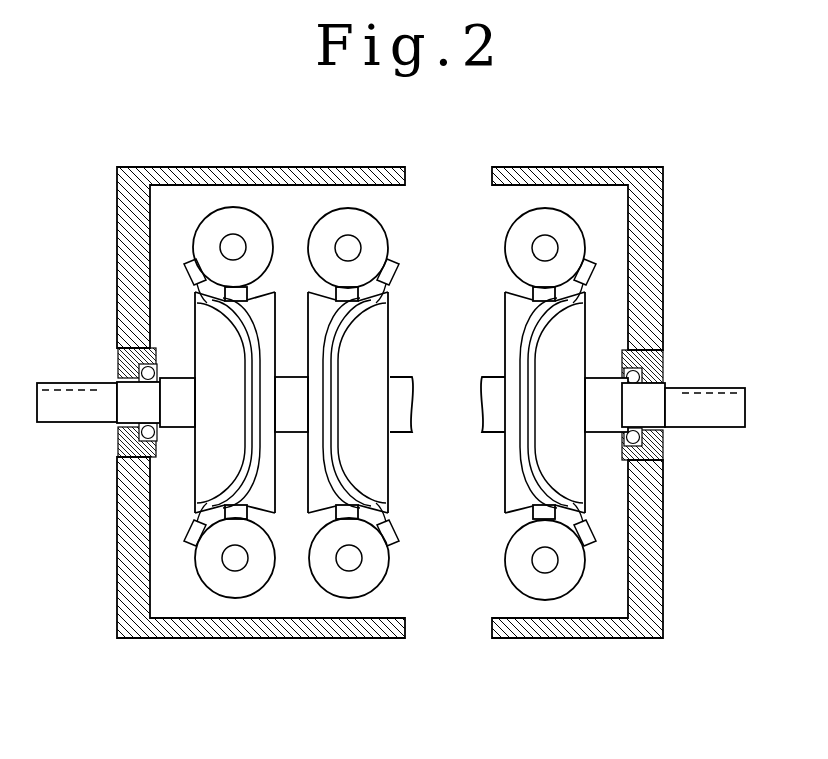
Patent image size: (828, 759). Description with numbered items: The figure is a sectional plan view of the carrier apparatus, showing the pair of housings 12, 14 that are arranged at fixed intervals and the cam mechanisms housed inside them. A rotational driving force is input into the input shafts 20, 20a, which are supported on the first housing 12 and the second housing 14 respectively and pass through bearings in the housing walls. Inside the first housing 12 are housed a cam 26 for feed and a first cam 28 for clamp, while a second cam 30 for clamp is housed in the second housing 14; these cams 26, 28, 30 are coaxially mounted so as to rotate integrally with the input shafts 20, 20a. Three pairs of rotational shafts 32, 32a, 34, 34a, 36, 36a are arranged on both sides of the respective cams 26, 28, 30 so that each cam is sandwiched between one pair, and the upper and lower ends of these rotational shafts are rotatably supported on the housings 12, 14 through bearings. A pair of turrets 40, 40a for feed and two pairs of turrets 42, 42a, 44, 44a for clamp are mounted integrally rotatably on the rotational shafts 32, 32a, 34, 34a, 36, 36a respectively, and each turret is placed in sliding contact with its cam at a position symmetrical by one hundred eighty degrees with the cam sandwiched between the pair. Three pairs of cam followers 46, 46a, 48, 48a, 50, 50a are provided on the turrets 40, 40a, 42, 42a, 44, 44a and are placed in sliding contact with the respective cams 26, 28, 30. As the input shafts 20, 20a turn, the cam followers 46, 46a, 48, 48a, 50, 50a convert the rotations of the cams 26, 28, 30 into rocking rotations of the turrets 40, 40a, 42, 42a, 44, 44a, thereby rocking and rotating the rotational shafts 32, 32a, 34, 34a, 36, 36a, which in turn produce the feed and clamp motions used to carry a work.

The first housing 12 is at (127, 585).
The second housing 14 is at (663, 603).
The input shaft 20 is at (43, 424).
The input shaft 20a is at (700, 428).
The cam for feed 26 is at (202, 472).
The first cam for clamp 28 is at (380, 445).
The second cam for clamp 30 is at (517, 475).
The rotational shaft 32 is at (235, 245).
The rotational shaft 34 is at (375, 230).
The rotational shaft 36 is at (545, 246).
The rotational shaft 32a is at (243, 562).
The rotational shaft 34a is at (350, 562).
The rotational shaft 36a is at (543, 565).
The turret for feed 40 is at (255, 232).
The turret for clamp 42 is at (350, 246).
The turret for clamp 44 is at (570, 228).
The turret for feed 40a is at (208, 578).
The turret for clamp 42a is at (342, 587).
The turret for clamp 44a is at (563, 580).
The cam follower 46 is at (233, 294).
The cam follower 48 is at (355, 294).
The cam follower 50 is at (583, 276).
The cam follower 46a is at (190, 537).
The cam follower 48a is at (355, 513).
The cam follower 50a is at (583, 535).